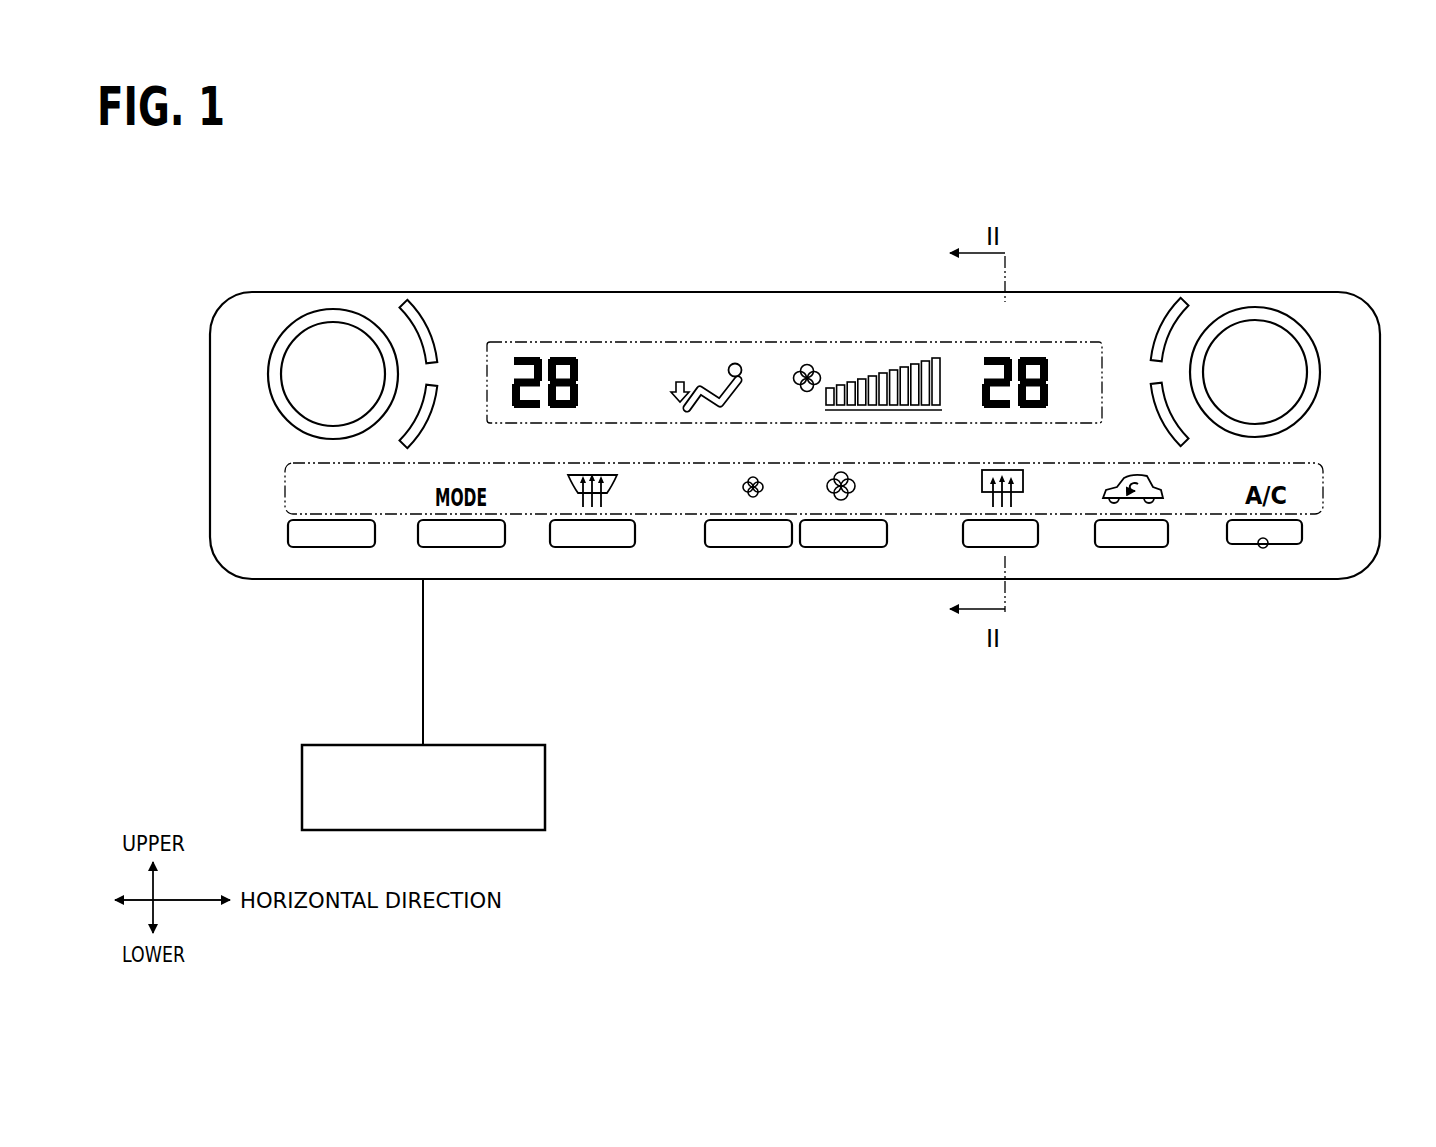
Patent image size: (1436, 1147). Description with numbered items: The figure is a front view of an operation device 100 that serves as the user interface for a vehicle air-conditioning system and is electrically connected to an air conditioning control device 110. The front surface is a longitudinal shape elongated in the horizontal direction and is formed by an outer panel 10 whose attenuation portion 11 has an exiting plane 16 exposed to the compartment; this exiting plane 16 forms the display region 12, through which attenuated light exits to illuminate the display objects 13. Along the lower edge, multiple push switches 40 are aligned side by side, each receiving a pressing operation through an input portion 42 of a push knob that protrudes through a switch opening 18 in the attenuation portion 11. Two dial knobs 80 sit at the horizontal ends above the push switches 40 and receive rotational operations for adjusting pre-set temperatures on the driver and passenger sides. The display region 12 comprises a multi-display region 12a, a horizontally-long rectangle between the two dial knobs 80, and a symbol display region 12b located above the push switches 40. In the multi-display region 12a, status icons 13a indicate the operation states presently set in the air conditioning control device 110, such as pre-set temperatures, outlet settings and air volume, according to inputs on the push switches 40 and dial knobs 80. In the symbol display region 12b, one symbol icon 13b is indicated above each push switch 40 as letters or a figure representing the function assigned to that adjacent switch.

The operation device 100 is at (1345, 280).
The dial knob 80 is at (373, 310).
The exiting plane 16 is at (1115, 328).
The outer panel 10 is at (804, 351).
The attenuation portion 11 is at (804, 351).
The display region 12 is at (804, 351).
The multi-display region 12a is at (718, 340).
The symbol display region 12b is at (782, 462).
The display object 13 is at (662, 454).
The status icon 13a is at (487, 368).
The symbol icon 13b is at (300, 497).
The push switch 40 is at (813, 587).
The input portion 42 is at (1283, 587).
The switch opening 18 is at (1263, 548).
The air conditioning control device 110 is at (545, 780).